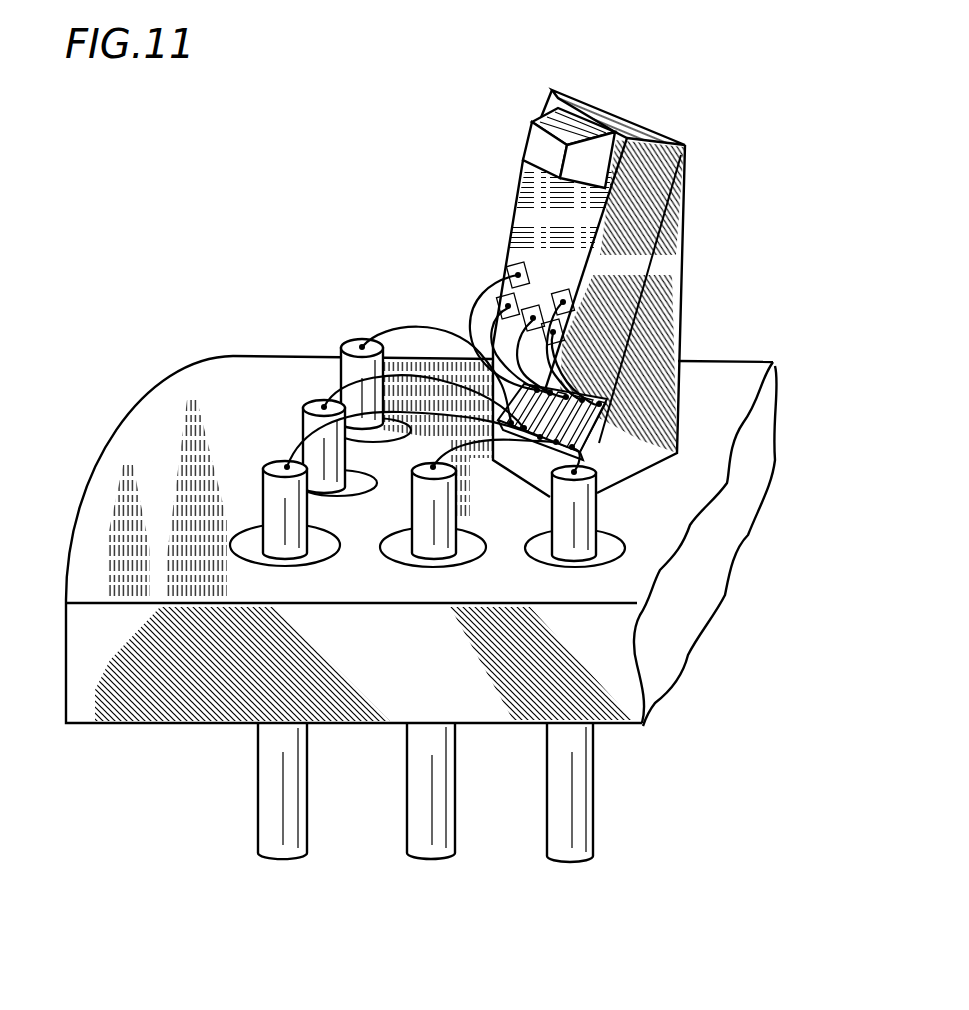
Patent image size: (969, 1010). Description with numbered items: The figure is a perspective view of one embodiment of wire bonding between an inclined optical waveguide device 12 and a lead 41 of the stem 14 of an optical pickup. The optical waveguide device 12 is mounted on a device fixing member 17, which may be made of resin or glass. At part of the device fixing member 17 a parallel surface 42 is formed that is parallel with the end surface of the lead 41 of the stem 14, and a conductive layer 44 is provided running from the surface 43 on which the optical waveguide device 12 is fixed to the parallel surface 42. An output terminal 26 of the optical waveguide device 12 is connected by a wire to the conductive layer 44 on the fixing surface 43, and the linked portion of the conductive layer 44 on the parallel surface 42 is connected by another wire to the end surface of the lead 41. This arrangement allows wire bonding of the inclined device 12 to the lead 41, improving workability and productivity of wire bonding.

The optical waveguide device 12 is at (614, 293).
The stem 14 is at (232, 392).
The device fixing member 17 is at (667, 261).
The output terminal 26 is at (508, 265).
The lead 41 is at (273, 503).
The parallel surface 42 is at (597, 478).
The surface for fixing optical waveguide device 43 is at (618, 393).
The conductive layer 44 is at (603, 423).